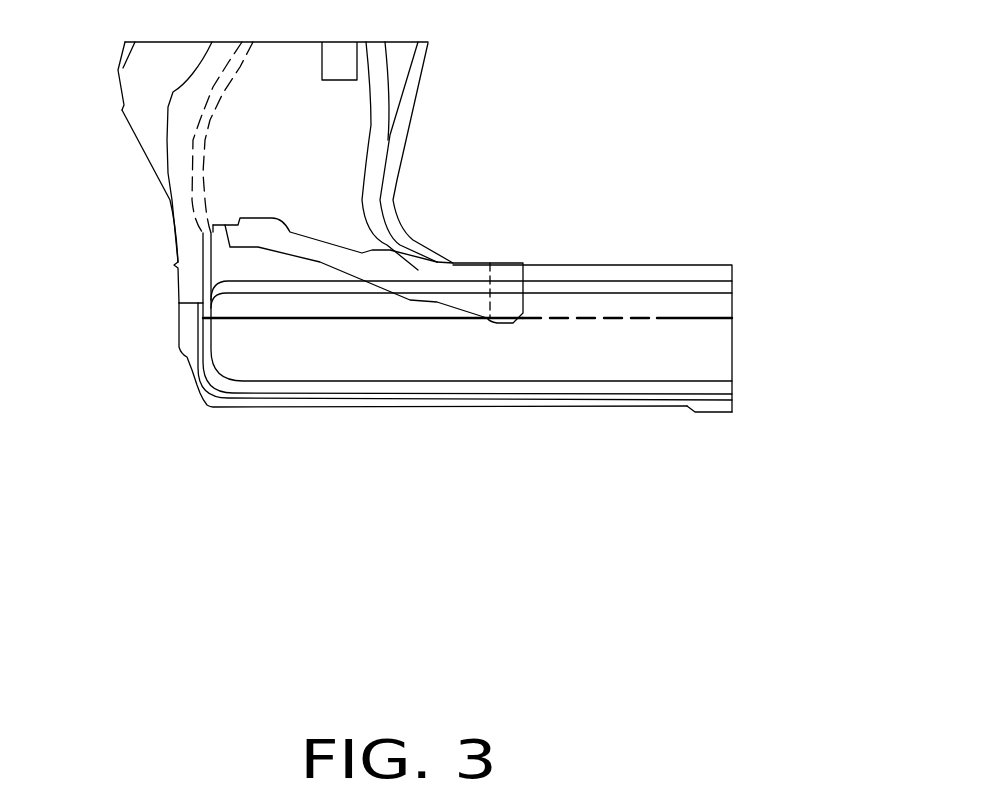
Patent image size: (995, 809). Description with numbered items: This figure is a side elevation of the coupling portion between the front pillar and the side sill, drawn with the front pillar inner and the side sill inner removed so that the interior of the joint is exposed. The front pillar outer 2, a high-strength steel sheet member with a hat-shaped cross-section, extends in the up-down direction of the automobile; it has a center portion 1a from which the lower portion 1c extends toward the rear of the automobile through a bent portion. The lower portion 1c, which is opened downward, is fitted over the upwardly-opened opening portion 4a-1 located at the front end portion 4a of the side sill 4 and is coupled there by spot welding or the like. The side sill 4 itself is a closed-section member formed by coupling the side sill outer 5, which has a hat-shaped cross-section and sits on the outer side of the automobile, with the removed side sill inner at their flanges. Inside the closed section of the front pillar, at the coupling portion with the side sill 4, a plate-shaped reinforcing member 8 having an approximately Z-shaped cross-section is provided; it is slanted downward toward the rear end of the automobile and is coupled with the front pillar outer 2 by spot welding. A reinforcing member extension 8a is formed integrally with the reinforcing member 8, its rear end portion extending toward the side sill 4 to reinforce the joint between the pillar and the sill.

The center portion 1a is at (122, 110).
The front pillar outer 2 is at (137, 137).
The lower portion 1c is at (233, 305).
The reinforcing member 8 is at (317, 267).
The reinforcing member extension 8a is at (505, 280).
The side sill 4 is at (332, 438).
The front end portion 4a is at (250, 402).
The opening portion 4a-1 is at (362, 318).
The side sill outer 5 is at (620, 407).